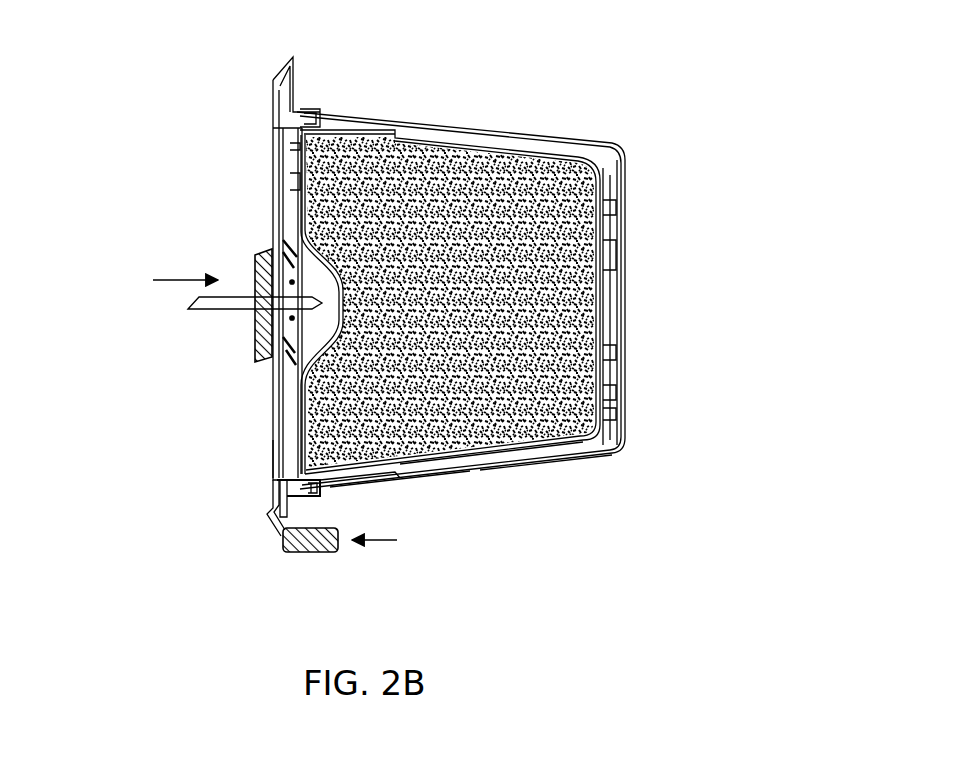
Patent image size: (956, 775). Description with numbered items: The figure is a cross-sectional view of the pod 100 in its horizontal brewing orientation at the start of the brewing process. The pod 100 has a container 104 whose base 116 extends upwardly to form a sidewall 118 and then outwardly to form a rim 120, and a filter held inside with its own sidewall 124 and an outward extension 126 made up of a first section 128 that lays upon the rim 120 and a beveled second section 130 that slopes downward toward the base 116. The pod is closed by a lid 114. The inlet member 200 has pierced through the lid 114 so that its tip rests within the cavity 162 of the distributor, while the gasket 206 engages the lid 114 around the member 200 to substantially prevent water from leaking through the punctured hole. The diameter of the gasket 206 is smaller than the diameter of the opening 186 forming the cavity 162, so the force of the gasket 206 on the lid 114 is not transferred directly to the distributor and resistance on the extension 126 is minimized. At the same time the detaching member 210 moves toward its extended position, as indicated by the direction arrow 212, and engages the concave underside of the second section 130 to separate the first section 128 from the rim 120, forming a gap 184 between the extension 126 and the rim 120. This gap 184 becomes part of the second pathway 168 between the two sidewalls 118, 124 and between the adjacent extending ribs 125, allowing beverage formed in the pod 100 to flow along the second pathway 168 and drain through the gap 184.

The pod 100 is at (526, 50).
The container 104 is at (516, 130).
The lid 114 is at (268, 216).
The base 116 is at (627, 322).
The sidewall 118 is at (572, 470).
The rim 120 is at (293, 521).
The sidewall 124 is at (510, 462).
The extending ribs 125 is at (396, 480).
The extension 126 is at (253, 556).
The first section 128 is at (268, 490).
The second section 130 is at (275, 538).
The cavity 162 is at (323, 306).
The second pathway 168 is at (455, 470).
The gap 184 is at (280, 505).
The opening 186 is at (292, 362).
The inlet member 200 is at (130, 352).
The gasket 206 is at (256, 324).
The detaching member 210 is at (308, 552).
The direction arrow 212 is at (386, 545).